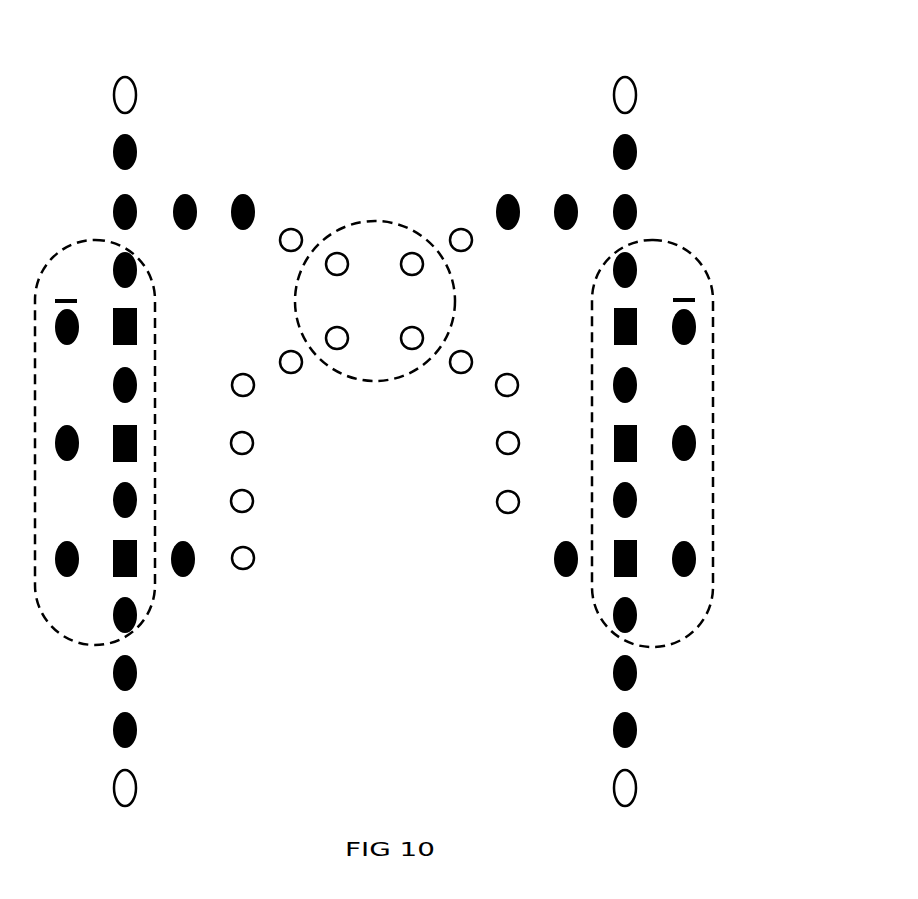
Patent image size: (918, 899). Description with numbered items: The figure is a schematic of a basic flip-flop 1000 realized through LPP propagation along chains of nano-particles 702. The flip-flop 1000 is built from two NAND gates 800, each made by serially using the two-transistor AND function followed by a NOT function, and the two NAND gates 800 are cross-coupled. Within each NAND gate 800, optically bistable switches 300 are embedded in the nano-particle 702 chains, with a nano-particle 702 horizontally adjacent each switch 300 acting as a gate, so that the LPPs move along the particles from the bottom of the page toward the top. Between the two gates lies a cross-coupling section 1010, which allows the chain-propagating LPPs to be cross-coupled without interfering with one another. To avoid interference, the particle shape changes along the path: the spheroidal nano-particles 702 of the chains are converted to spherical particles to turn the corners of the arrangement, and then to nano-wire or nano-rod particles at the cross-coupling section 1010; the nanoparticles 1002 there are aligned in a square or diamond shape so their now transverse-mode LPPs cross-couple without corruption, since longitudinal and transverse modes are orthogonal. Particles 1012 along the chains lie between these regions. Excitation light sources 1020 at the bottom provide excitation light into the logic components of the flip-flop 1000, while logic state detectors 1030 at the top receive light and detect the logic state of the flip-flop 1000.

The flip-flop 1000 is at (685, 60).
The logic state detector 1030 is at (136, 95).
The LLP excitation light source 1020 is at (136, 788).
The electrode 1012 is at (190, 228).
The cross-coupling section 1010 is at (405, 225).
The nanoparticle 1002 is at (254, 558).
The NAND gate 800 is at (60, 634).
The optically bistable switch 300 is at (137, 325).
The nano-particle 702 is at (136, 673).